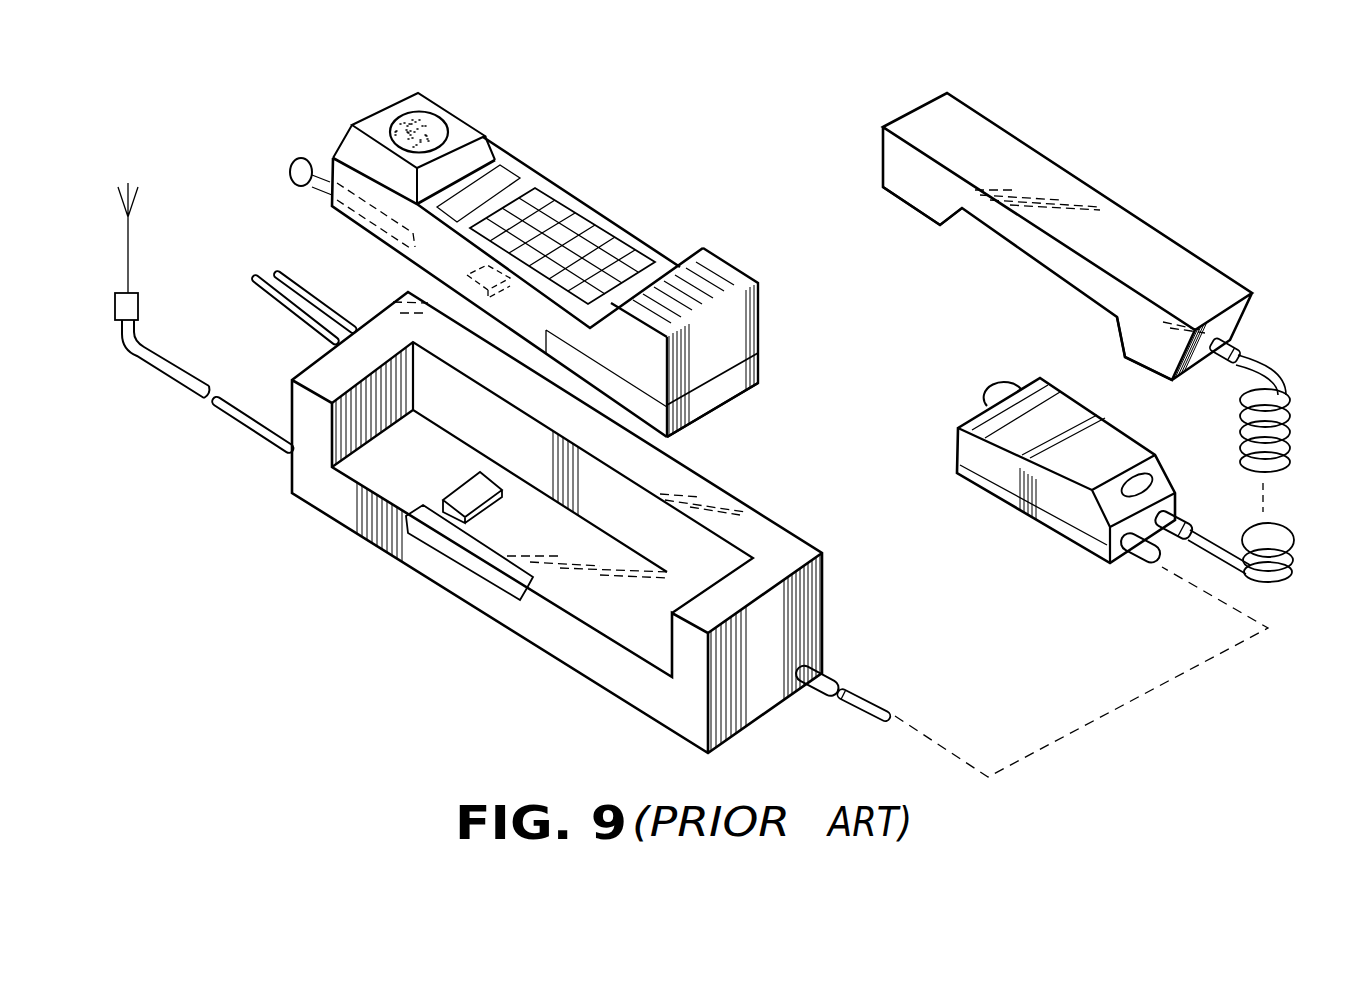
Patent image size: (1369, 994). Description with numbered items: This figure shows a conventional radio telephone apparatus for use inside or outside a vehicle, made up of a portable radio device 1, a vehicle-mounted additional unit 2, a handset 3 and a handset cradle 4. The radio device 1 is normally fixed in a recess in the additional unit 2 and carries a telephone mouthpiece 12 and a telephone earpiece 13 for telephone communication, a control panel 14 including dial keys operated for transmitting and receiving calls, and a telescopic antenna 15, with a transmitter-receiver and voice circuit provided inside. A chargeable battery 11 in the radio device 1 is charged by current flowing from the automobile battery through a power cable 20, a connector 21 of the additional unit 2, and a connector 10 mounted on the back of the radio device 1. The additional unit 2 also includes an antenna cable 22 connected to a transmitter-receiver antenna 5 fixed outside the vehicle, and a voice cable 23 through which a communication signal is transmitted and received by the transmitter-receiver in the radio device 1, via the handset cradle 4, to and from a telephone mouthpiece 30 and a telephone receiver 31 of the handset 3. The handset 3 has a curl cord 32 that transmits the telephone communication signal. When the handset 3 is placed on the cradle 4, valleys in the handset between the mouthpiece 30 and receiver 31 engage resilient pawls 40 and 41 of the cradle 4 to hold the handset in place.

The portable radio device 1 is at (543, 150).
The vehicle-mounted additional unit 2 is at (480, 623).
The handset 3 is at (1138, 192).
The handset cradle 4 is at (1033, 532).
The transmitter-receiver antenna 5 is at (128, 237).
The connector 10 is at (472, 275).
The chargeable battery 11 is at (725, 393).
The telephone mouthpiece 12 is at (722, 276).
The telephone earpiece 13 is at (436, 122).
The control panel 14 is at (549, 211).
The telescopic antenna 15 is at (306, 158).
The power cable 20 is at (301, 316).
The connector 21 is at (447, 488).
The antenna cable 22 is at (241, 430).
The voice cable 23 is at (858, 707).
The telephone mouthpiece 30 is at (1142, 370).
The telephone receiver 31 is at (900, 202).
The curl cord 32 is at (1290, 428).
The resilient pawl 40 is at (1153, 477).
The resilient pawl 41 is at (995, 397).